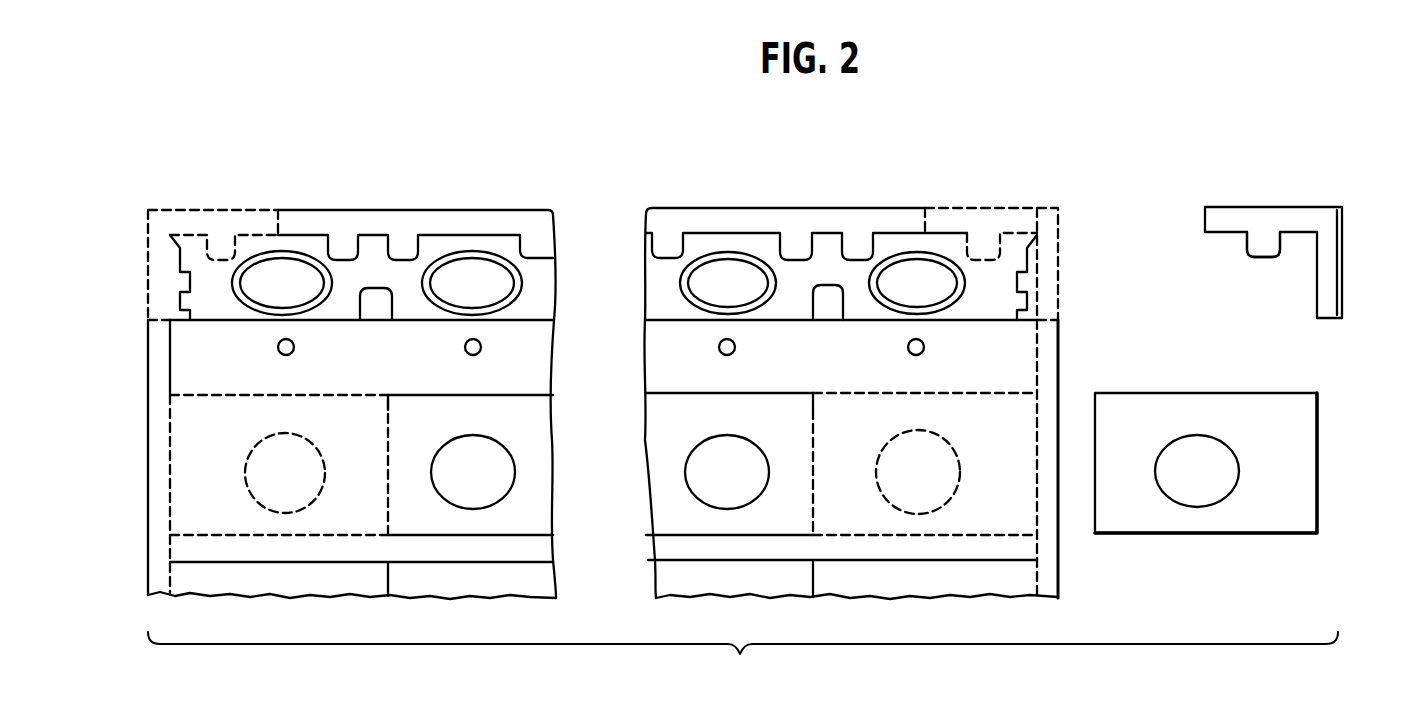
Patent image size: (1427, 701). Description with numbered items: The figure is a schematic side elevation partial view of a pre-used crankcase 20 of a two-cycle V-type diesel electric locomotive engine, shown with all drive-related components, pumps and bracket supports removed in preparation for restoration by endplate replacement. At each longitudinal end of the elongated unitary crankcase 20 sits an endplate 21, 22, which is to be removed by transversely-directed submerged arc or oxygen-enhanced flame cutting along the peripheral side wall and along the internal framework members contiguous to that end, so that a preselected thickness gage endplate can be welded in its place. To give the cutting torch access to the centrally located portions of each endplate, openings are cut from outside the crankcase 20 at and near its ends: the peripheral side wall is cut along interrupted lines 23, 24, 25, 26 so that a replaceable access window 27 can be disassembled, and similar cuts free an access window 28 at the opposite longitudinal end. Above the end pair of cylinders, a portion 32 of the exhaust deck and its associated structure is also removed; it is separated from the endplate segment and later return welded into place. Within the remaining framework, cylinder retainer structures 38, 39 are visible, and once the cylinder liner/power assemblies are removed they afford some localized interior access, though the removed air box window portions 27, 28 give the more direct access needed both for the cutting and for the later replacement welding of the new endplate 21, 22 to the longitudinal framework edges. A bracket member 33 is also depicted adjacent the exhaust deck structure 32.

The crankcase 20 is at (570, 576).
The endplate 21 is at (150, 428).
The endplate 22 is at (1058, 380).
The interrupted cutting line 23 is at (321, 394).
The interrupted cutting line 24 is at (388, 462).
The interrupted cutting line 25 is at (253, 538).
The interrupted cutting line 26 is at (172, 520).
The replaceable access window 27 is at (339, 436).
The access window 28 is at (1284, 434).
The portion of the exhaust deck and associated structure 32 is at (1265, 214).
The bracket member 33 is at (1362, 196).
The cylinder retainer structure 38 is at (266, 297).
The cylinder retainer structure 39 is at (456, 297).